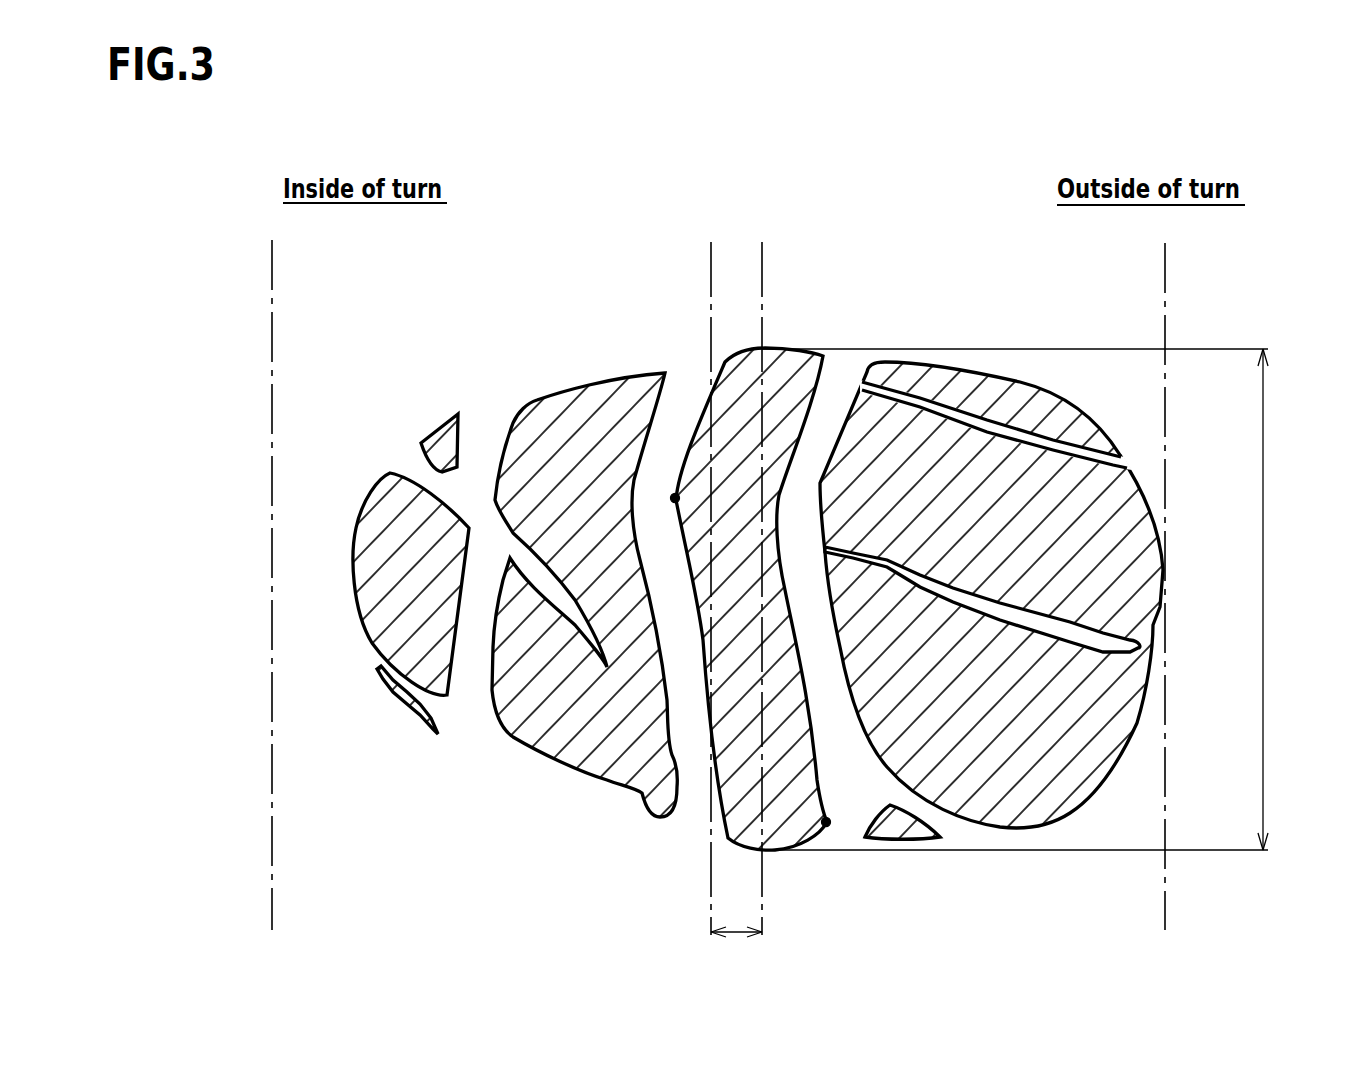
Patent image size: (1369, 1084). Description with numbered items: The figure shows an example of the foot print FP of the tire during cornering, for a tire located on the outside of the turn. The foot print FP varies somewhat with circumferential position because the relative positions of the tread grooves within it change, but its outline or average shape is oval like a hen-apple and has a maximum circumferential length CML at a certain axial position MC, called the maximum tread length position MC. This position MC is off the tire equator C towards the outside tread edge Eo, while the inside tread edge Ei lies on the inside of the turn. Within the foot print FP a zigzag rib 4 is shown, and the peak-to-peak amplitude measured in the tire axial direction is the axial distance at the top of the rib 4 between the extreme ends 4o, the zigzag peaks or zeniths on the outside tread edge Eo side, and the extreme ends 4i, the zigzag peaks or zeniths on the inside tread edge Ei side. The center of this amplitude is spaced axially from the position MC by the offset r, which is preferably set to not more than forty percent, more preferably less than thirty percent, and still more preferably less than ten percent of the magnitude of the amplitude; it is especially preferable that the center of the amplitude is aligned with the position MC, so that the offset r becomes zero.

The rib 4 is at (781, 380).
The extreme ends on inside tread edge side 4i is at (675, 497).
The extreme ends on outside tread edge side 4o is at (826, 822).
The foot print FP is at (547, 412).
The inside tread edge Ei is at (272, 318).
The outside tread edge Eo is at (1165, 320).
The tire equator C is at (707, 571).
The maximum tread length position MC is at (799, 571).
The maximum circumferential length CML is at (1026, 599).
The offset r is at (736, 946).